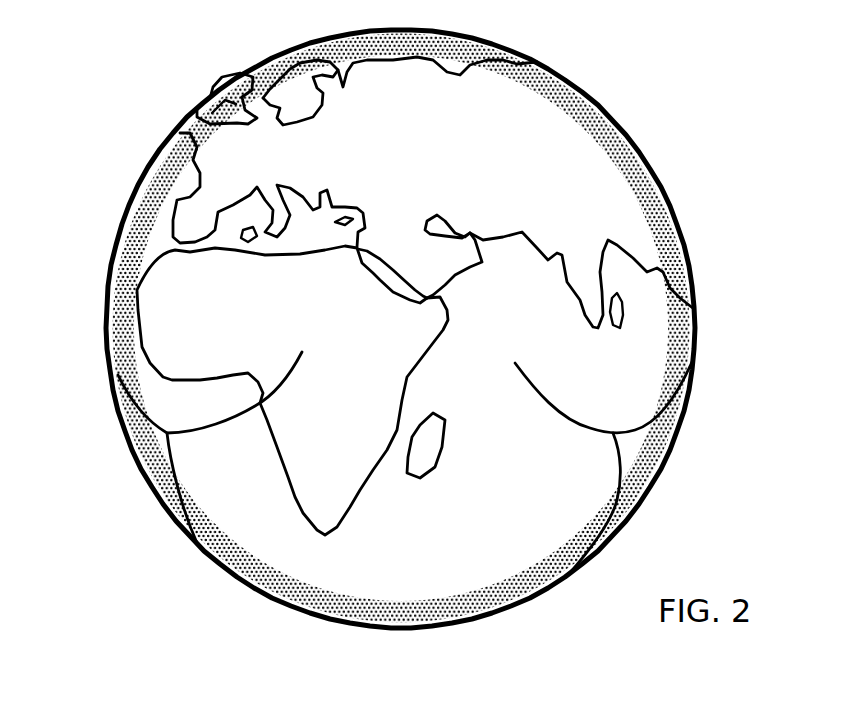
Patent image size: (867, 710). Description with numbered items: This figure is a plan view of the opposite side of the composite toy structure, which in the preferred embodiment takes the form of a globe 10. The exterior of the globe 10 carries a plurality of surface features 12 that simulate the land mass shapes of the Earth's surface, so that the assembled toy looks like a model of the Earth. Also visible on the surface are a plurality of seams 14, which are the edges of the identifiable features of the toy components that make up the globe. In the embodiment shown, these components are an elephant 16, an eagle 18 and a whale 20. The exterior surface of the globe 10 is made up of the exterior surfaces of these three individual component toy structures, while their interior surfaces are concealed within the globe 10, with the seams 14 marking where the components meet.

The globe 10 is at (664, 148).
The surface features 12 is at (172, 290).
The seams 14 is at (617, 483).
The elephant 16 is at (417, 175).
The eagle 18 is at (137, 463).
The whale 20 is at (661, 458).